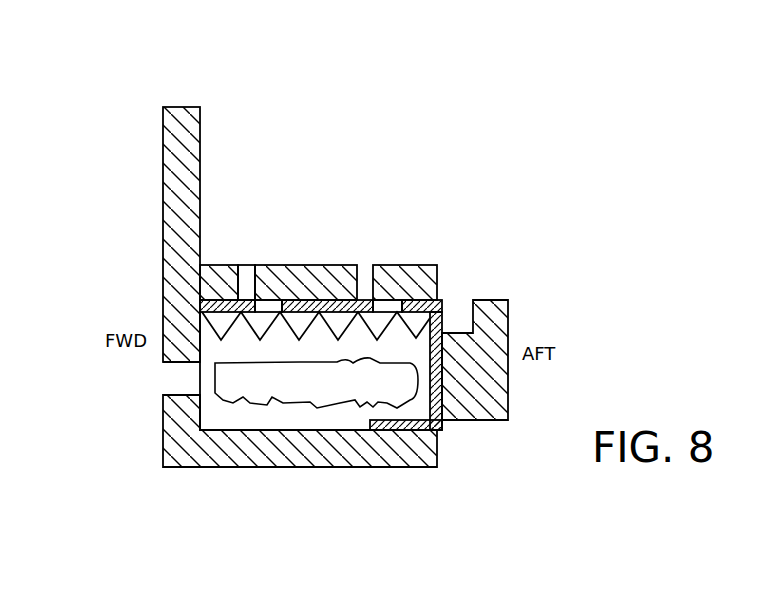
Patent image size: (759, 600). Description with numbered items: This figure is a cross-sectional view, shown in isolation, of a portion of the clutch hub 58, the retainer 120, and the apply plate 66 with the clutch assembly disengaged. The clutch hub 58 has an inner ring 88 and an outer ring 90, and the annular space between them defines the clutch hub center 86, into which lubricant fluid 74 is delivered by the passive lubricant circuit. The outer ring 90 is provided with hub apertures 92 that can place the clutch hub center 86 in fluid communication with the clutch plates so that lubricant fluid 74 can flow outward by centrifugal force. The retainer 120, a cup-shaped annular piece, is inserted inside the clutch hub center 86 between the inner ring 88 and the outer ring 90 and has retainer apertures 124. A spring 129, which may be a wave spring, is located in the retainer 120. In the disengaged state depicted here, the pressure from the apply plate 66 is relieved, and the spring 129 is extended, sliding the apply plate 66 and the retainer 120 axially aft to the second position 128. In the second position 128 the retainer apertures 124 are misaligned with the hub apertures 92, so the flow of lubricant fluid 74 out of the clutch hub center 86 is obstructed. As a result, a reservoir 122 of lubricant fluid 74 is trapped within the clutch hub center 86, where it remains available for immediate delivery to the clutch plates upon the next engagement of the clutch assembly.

The second position 128 is at (321, 313).
The clutch hub 58 is at (185, 198).
The outer ring 90 is at (401, 268).
The hub apertures 92 is at (245, 272).
The retainer apertures 124 is at (265, 305).
The clutch hub center 86 is at (307, 347).
The spring 129 is at (412, 313).
The retainer 120 is at (442, 322).
The apply plate 66 is at (478, 410).
The inner ring 88 is at (390, 455).
The reservoir 122 is at (233, 385).
The lubricant fluid 74 is at (277, 392).